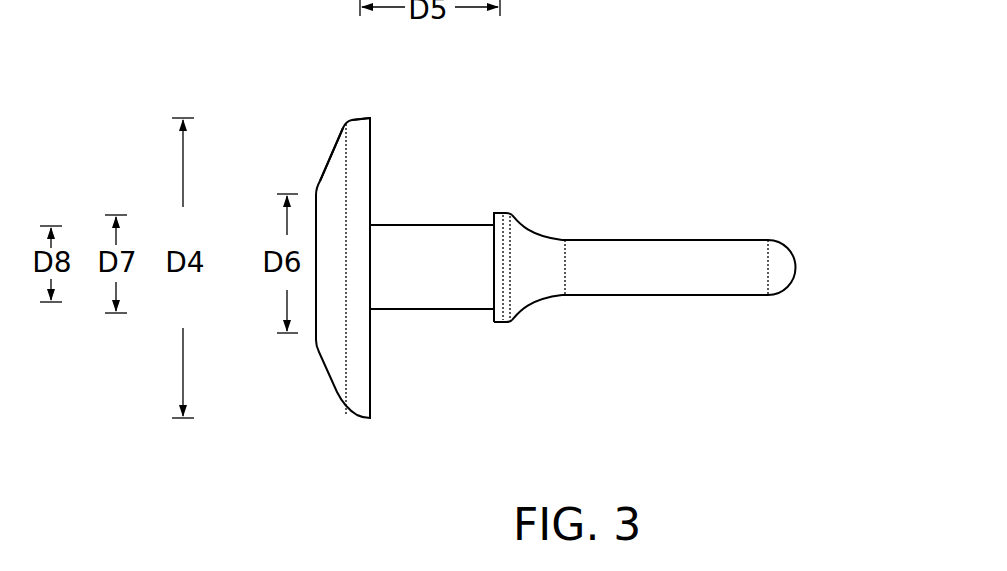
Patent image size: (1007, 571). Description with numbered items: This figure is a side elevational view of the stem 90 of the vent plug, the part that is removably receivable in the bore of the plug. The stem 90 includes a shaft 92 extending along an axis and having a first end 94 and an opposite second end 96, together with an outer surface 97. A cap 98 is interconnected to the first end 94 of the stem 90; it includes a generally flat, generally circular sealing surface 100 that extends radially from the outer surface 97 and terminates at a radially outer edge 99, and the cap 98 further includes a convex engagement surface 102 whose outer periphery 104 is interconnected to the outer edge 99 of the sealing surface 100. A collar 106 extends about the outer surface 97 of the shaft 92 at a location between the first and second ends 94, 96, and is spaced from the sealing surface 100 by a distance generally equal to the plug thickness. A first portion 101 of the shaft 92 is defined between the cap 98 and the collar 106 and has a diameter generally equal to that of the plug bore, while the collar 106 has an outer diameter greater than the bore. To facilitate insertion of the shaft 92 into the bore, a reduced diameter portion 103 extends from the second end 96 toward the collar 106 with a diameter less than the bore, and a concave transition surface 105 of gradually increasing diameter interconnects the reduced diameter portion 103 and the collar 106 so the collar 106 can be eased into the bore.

The stem 90 is at (552, 255).
The shaft 92 is at (454, 224).
The first end 94 is at (375, 221).
The second end 96 is at (798, 247).
The outer surface 97 is at (460, 310).
The cap 98 is at (330, 380).
The radially outer edge 99 is at (372, 127).
The sealing surface 100 is at (373, 377).
The first portion 101 is at (427, 314).
The convex engagement surface 102 is at (324, 181).
The reduced diameter portion 103 is at (668, 239).
The outer periphery 104 is at (369, 118).
The concave transition surface 105 is at (535, 232).
The collar 106 is at (498, 212).